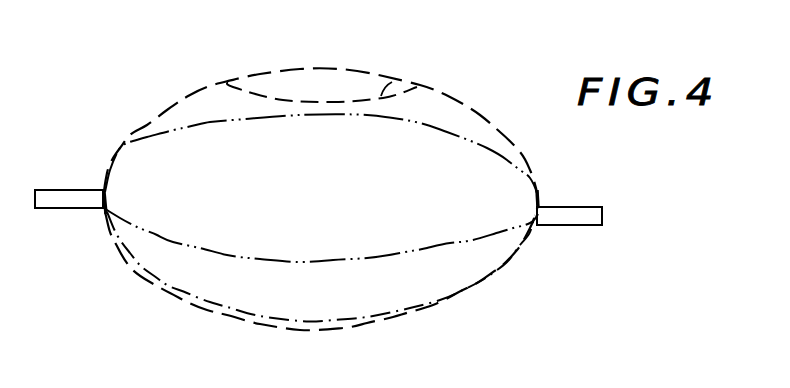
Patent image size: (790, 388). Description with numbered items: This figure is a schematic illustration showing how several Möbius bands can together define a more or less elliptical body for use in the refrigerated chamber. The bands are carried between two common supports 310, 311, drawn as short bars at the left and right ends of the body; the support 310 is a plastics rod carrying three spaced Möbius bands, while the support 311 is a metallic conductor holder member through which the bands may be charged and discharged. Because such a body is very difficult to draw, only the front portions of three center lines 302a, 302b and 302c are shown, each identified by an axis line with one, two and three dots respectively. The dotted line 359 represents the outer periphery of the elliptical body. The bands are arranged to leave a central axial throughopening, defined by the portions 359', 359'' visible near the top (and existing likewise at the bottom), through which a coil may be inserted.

The common support 310 is at (60, 190).
The common support 311 is at (587, 195).
The center line 302a is at (154, 281).
The center line 302b is at (231, 237).
The center line 302c is at (237, 122).
The dotted line representing outer periphery of the elliptical body 359 is at (321, 204).
The throughopening portion 359' is at (338, 63).
The throughopening portion 359'' is at (444, 72).